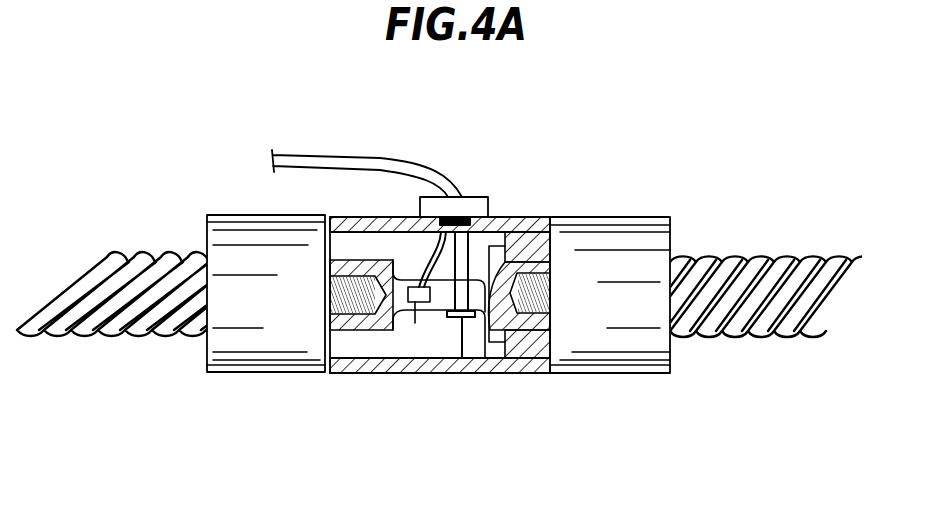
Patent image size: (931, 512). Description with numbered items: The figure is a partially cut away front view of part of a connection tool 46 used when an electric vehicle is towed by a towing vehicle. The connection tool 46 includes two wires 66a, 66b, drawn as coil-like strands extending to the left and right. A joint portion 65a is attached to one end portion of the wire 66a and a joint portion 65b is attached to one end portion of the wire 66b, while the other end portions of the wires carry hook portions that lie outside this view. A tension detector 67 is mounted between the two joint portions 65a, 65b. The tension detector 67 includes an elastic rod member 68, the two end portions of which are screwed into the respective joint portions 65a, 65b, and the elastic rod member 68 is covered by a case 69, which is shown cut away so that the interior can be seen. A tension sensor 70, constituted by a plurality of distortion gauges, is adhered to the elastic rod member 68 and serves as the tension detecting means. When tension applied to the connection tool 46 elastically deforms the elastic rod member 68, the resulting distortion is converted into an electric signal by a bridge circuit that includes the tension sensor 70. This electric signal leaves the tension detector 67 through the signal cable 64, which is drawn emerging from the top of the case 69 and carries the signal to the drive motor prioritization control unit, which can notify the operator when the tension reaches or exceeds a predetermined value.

The connection tool 46 is at (732, 205).
The signal cable 64 is at (377, 158).
The joint portion 65a is at (257, 340).
The joint portion 65b is at (625, 333).
The wire 66a is at (117, 318).
The wire 66b is at (745, 323).
The tension detector 67 is at (516, 210).
The elastic rod member 68 is at (383, 330).
The case 69 is at (521, 362).
The tension sensor 70 is at (462, 317).